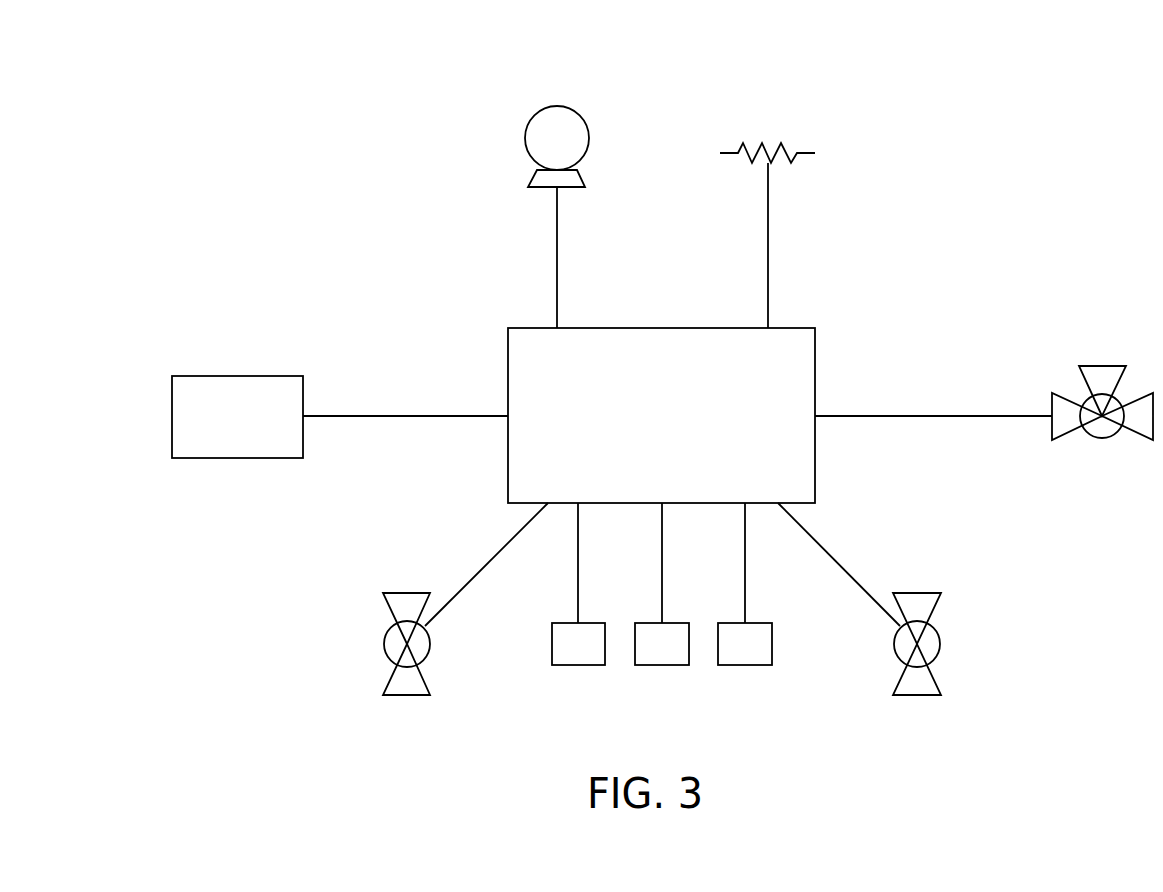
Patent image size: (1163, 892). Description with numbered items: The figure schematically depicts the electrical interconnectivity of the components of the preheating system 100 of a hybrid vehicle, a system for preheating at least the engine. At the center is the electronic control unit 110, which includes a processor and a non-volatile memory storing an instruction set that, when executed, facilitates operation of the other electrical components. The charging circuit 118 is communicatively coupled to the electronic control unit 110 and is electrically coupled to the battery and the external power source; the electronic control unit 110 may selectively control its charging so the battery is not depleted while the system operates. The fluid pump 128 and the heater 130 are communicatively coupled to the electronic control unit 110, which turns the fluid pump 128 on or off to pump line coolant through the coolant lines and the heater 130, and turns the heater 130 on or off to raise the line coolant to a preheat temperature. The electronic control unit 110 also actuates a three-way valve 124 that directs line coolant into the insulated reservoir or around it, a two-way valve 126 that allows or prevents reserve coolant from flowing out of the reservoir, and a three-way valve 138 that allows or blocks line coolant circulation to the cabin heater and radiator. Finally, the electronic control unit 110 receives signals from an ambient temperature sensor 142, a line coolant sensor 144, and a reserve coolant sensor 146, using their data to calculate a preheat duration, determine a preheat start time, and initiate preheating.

The preheating system 100 is at (965, 197).
The electronic control unit 110 is at (643, 429).
The charging circuit 118 is at (237, 375).
The valve 124 is at (1102, 366).
The valve 126 is at (942, 644).
The fluid pump 128 is at (557, 107).
The heater 130 is at (783, 142).
The valve 138 is at (384, 644).
The ambient temperature sensor 142 is at (578, 665).
The line coolant sensor 144 is at (662, 665).
The reserve coolant sensor 146 is at (745, 665).